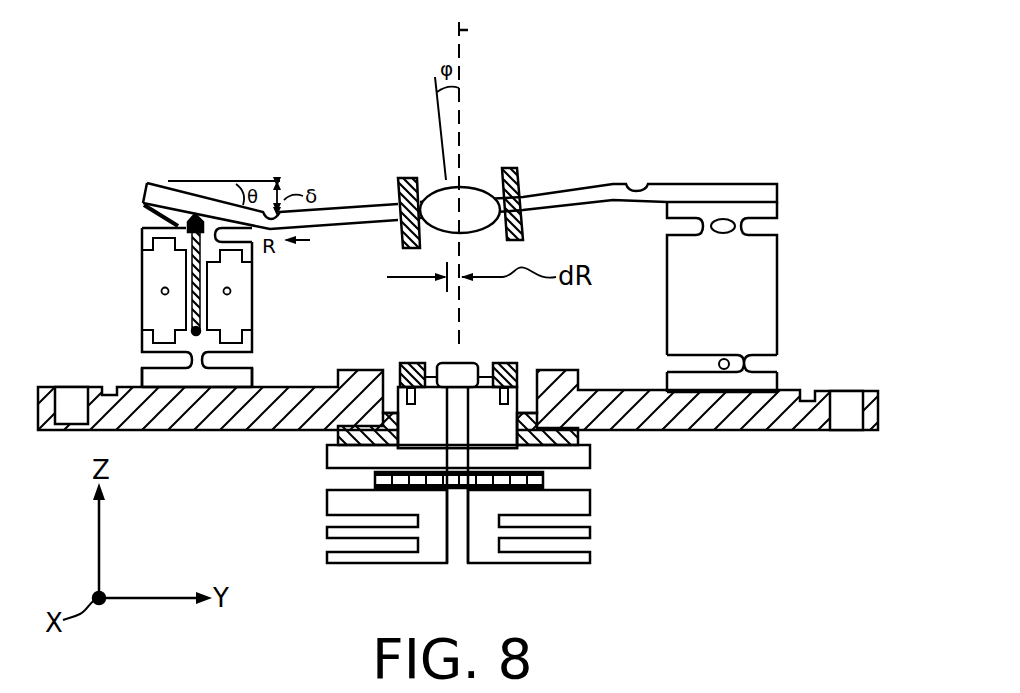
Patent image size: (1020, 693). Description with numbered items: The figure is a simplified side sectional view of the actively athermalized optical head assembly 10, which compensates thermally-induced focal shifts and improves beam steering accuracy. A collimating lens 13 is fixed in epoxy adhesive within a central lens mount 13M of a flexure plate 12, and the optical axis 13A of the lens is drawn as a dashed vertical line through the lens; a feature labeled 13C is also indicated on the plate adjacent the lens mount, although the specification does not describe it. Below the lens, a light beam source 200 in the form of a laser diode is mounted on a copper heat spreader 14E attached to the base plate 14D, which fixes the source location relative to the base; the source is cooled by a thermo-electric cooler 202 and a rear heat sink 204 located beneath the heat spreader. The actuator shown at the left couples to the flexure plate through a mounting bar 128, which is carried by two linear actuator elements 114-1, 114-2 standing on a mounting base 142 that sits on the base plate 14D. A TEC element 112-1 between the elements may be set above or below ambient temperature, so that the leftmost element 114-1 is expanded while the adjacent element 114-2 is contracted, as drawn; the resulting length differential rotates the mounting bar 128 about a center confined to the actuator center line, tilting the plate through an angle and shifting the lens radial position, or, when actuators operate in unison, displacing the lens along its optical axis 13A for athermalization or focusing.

The optical head assembly 10 is at (866, 277).
The flexure plate 12 is at (748, 184).
The collimating lens 13 is at (468, 186).
The optical axis 13A is at (468, 32).
The cantilever beam 13C is at (640, 188).
The central lens mount 13M is at (520, 172).
The base plate 14D is at (880, 417).
The copper heat spreader 14E is at (590, 456).
The TEC element 112-1 is at (207, 303).
The linear actuator element 114-1 is at (143, 277).
The linear actuator element 114-2 is at (245, 273).
The mounting bar 128 is at (144, 203).
The mounting base 142 is at (142, 380).
The light beam source 200 is at (462, 362).
The thermo-electric cooler 202 is at (543, 480).
The rear heat sink 204 is at (590, 533).